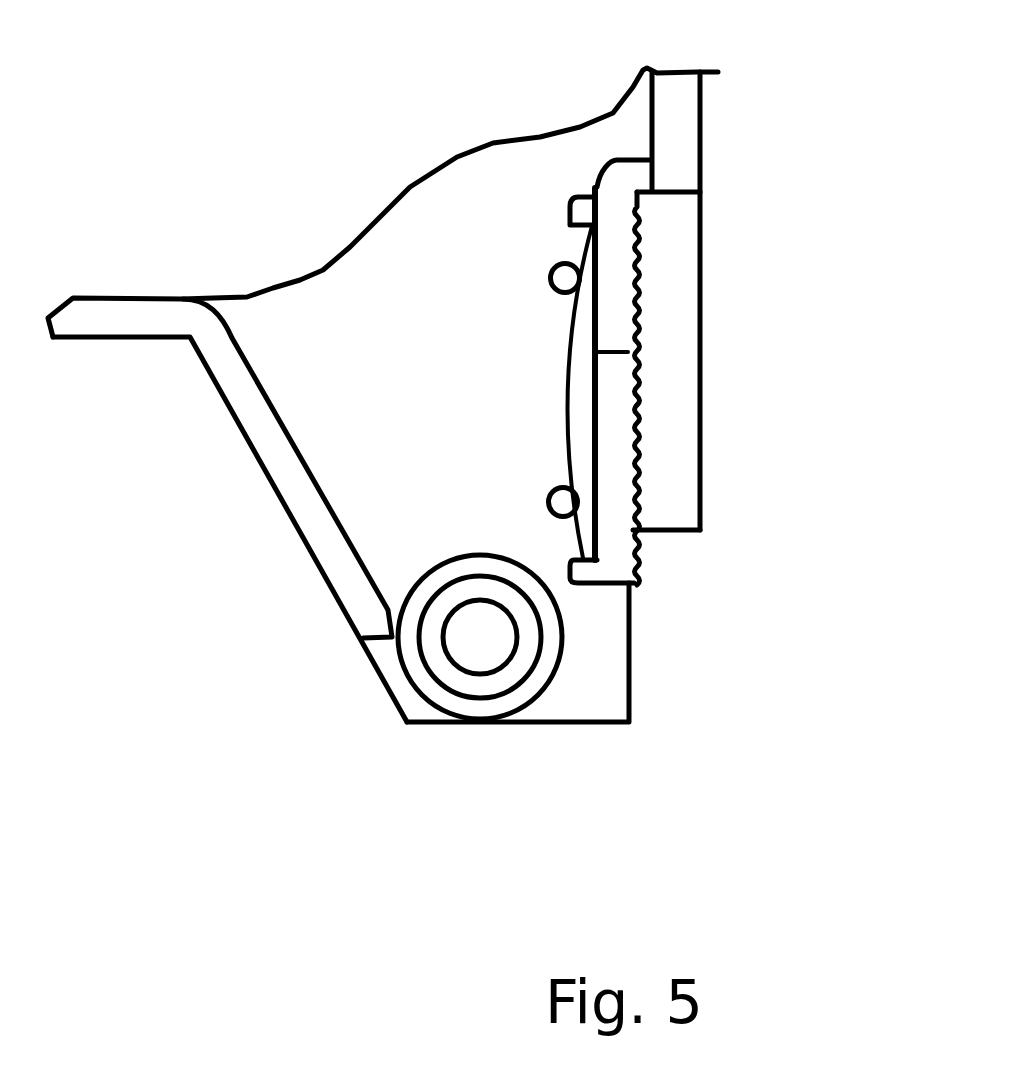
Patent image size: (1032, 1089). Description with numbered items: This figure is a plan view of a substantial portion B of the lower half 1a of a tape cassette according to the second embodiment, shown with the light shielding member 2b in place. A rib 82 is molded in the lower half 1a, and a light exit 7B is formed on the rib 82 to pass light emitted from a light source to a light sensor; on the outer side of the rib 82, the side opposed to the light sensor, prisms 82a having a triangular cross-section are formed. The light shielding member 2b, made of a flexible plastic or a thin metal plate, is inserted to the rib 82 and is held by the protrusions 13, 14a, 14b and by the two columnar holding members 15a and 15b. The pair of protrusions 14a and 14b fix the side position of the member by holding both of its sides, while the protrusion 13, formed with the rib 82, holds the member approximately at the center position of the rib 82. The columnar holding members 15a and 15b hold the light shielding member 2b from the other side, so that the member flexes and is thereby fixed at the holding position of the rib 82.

The lower half 1a is at (572, 708).
The protrusion 14a is at (593, 197).
The protrusion 14b is at (607, 567).
The light exit 7B is at (606, 378).
The protrusion 13 is at (568, 379).
The light shielding member 2b is at (572, 437).
The prisms 82a is at (638, 257).
The rib 82 is at (617, 497).
The columnar holding member 15a is at (548, 268).
The columnar holding member 15b is at (547, 497).
The portion B is at (213, 597).